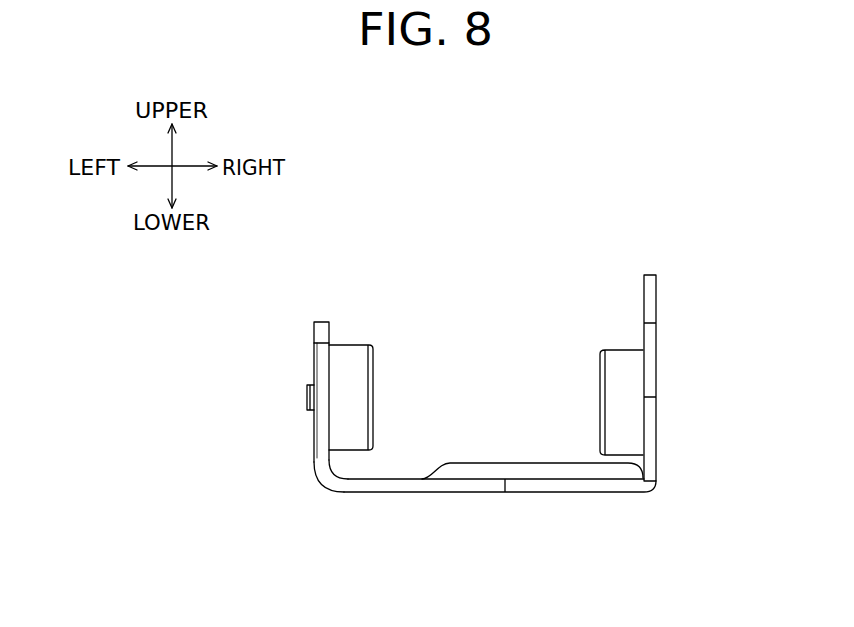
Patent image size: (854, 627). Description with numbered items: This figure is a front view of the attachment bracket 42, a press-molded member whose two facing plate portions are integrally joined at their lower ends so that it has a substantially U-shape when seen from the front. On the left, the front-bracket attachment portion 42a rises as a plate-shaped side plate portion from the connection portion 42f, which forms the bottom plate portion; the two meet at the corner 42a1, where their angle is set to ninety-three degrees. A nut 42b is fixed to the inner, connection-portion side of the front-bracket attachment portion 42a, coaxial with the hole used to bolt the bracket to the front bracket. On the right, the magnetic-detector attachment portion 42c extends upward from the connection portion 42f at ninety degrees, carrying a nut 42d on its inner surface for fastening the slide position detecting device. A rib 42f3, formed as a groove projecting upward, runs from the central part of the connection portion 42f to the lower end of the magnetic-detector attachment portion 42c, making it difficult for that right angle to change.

The attachment bracket 42 is at (448, 261).
The front-bracket attachment portion 42a is at (313, 434).
The corner 42a1 is at (321, 488).
The nut 42b is at (345, 344).
The magnetic-detector attachment portion 42c is at (657, 298).
The nut 42d is at (620, 349).
The connection portion 42f is at (407, 493).
The rib 42f3 is at (517, 462).